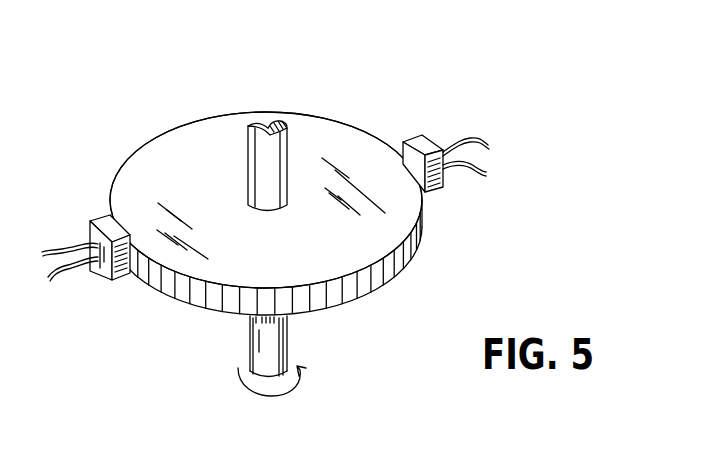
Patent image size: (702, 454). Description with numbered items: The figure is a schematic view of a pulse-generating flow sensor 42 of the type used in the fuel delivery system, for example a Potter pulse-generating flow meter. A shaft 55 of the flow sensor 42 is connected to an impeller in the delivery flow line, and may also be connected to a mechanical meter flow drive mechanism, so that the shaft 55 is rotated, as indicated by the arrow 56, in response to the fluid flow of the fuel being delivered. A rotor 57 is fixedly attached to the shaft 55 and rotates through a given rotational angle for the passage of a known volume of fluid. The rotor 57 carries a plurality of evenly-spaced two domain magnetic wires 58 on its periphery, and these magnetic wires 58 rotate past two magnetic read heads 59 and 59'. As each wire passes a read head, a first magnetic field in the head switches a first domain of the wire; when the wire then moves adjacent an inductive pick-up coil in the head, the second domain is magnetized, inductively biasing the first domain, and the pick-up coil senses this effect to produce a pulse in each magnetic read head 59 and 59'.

The flow sensor 42 is at (364, 99).
The shaft 55 is at (290, 352).
The arrow 56 is at (262, 398).
The rotor 57 is at (157, 150).
The two domain magnetic wires 58 is at (390, 277).
The magnetic read head 59 is at (86, 270).
The magnetic read head 59' is at (461, 177).